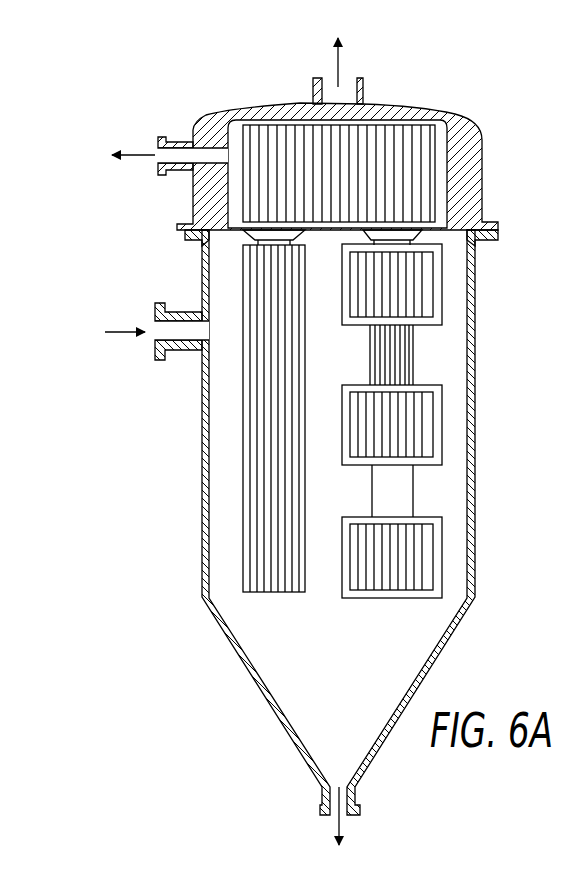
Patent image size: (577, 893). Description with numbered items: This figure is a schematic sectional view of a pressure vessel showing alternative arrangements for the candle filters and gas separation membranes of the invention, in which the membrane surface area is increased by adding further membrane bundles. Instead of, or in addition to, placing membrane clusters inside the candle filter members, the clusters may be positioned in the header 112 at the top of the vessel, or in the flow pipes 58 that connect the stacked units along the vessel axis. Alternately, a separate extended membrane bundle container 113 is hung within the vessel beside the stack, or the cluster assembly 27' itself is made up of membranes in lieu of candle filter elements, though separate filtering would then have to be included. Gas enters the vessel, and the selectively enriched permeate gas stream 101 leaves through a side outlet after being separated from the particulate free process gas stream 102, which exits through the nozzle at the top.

The selectively enriched permeate gas stream 101 is at (138, 148).
The particulate free process gas stream 102 is at (340, 75).
The header 112 is at (268, 133).
The extended membrane bundle container 113 is at (296, 460).
The flow pipes 58 is at (413, 355).
The cluster assembly 27' is at (422, 491).